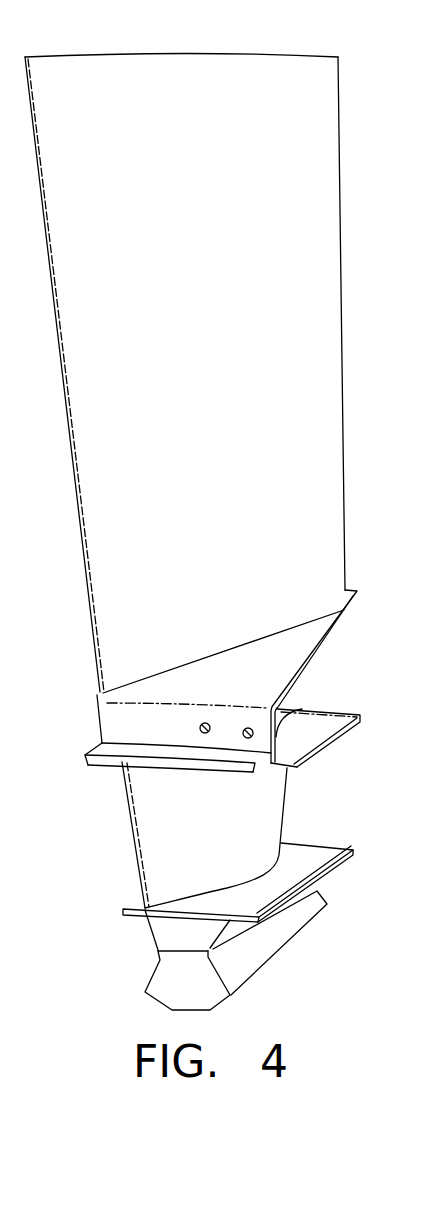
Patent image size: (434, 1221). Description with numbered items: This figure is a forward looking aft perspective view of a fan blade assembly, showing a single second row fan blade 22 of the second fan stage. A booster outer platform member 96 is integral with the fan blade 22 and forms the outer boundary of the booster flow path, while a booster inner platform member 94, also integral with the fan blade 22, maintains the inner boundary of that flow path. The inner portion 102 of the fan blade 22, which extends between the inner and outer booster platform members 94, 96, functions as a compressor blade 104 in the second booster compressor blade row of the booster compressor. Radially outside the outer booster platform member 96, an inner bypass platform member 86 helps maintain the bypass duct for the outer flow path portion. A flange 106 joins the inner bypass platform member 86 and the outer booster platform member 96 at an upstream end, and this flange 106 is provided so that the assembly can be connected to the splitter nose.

The second row fan blade 22 is at (198, 49).
The inner bypass platform member 86 is at (299, 674).
The flange 106 is at (117, 722).
The booster outer platform member 96 is at (330, 741).
The inner portion of fan blade 102 is at (123, 814).
The compressor blade 104 is at (237, 845).
The booster inner platform member 94 is at (328, 873).